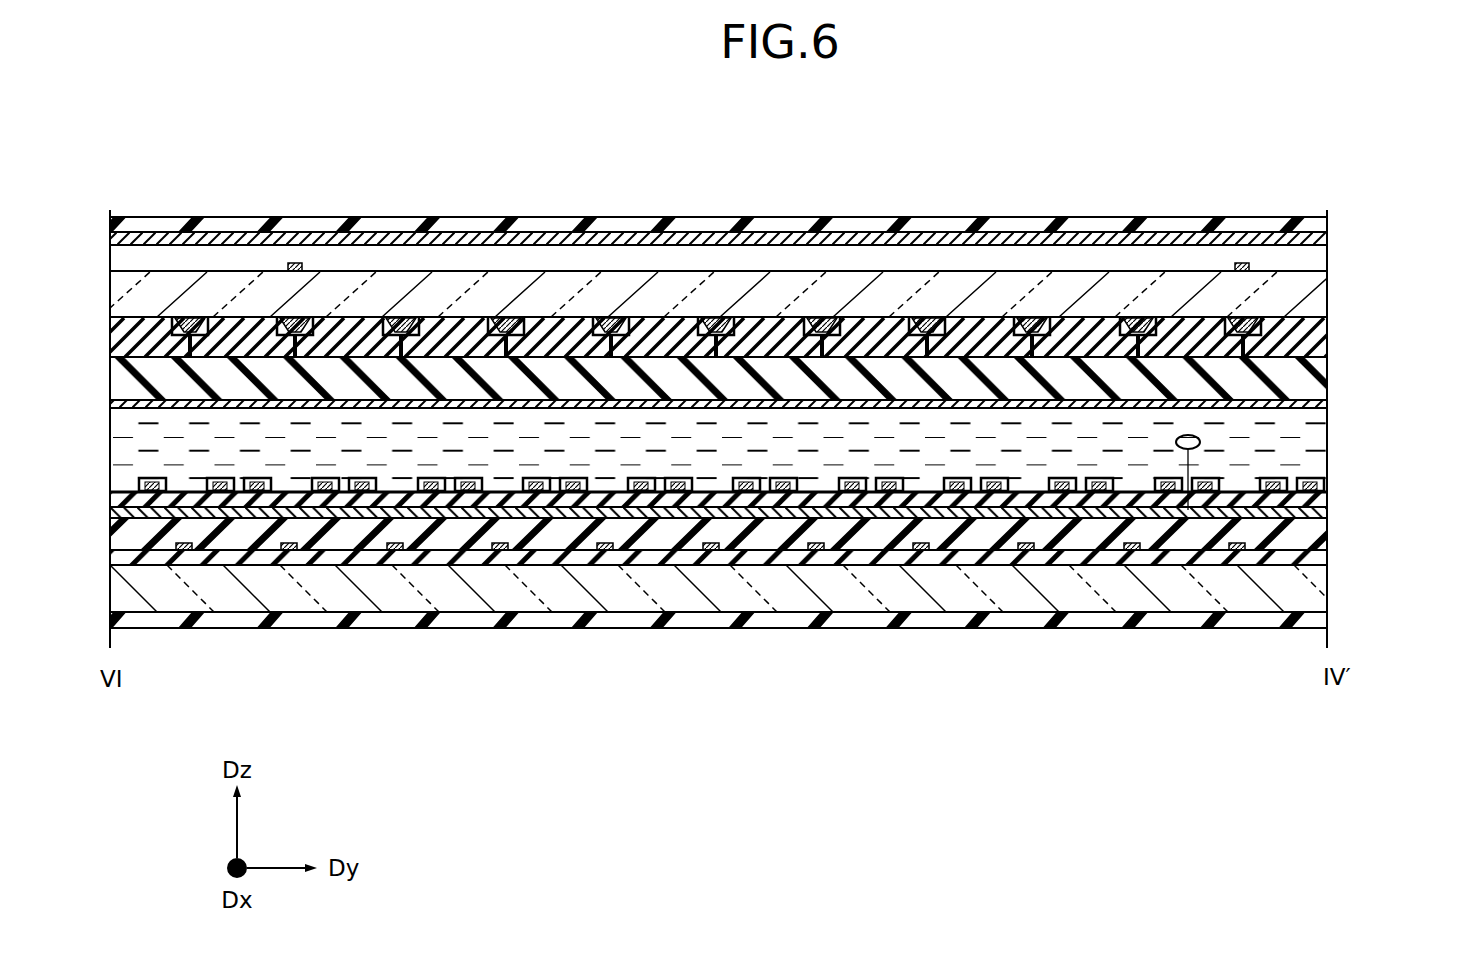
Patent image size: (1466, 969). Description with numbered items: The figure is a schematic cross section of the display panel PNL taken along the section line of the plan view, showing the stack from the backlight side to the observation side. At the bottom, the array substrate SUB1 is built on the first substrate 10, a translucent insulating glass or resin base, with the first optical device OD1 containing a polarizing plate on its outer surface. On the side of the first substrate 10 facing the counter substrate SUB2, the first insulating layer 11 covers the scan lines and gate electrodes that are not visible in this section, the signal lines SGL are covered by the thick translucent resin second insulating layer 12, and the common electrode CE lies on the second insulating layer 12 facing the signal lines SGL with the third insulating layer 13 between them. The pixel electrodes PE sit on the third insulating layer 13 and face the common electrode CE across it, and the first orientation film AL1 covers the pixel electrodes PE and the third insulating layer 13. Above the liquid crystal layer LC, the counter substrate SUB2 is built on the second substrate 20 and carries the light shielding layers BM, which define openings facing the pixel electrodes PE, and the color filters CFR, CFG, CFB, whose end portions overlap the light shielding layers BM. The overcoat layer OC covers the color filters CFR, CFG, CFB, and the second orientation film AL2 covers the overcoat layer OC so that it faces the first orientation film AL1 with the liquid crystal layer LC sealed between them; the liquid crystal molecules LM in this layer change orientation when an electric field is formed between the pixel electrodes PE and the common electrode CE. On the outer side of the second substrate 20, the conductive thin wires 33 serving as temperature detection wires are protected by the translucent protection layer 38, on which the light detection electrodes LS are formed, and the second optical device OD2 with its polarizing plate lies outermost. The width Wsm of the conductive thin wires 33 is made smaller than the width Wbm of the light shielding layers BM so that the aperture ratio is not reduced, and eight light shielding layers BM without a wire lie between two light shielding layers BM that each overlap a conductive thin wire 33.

The display panel PNL is at (1360, 203).
The second optical device OD2 is at (1312, 223).
The light detection electrodes LS is at (1313, 242).
The protection layer 38 is at (1313, 260).
The second substrate 20 is at (1313, 297).
The counter substrate SUB2 is at (1332, 337).
The light shielding layers BM is at (1262, 318).
The color filter CFB is at (1195, 330).
The color filter CFR is at (1278, 328).
The color filter CFG is at (1096, 325).
The conductive thin wires 33 is at (1244, 263).
The overcoat layer OC is at (1313, 372).
The second orientation film AL2 is at (1313, 404).
The liquid crystal layer LC is at (1313, 433).
The first orientation film AL1 is at (1327, 490).
The pixel electrodes PE is at (1280, 497).
The third insulating layer 13 is at (1327, 502).
The common electrode CE is at (1322, 512).
The array substrate SUB1 is at (1333, 520).
The second insulating layer 12 is at (1313, 545).
The first insulating layer 11 is at (1313, 573).
The first substrate 10 is at (1310, 591).
The first optical device OD1 is at (1307, 620).
The signal lines SGL is at (1203, 692).
The liquid crystal molecules LM is at (1188, 510).
The width of the light shielding layers Wbm is at (1260, 118).
The width of the conductive thin wires Wsm is at (1234, 183).